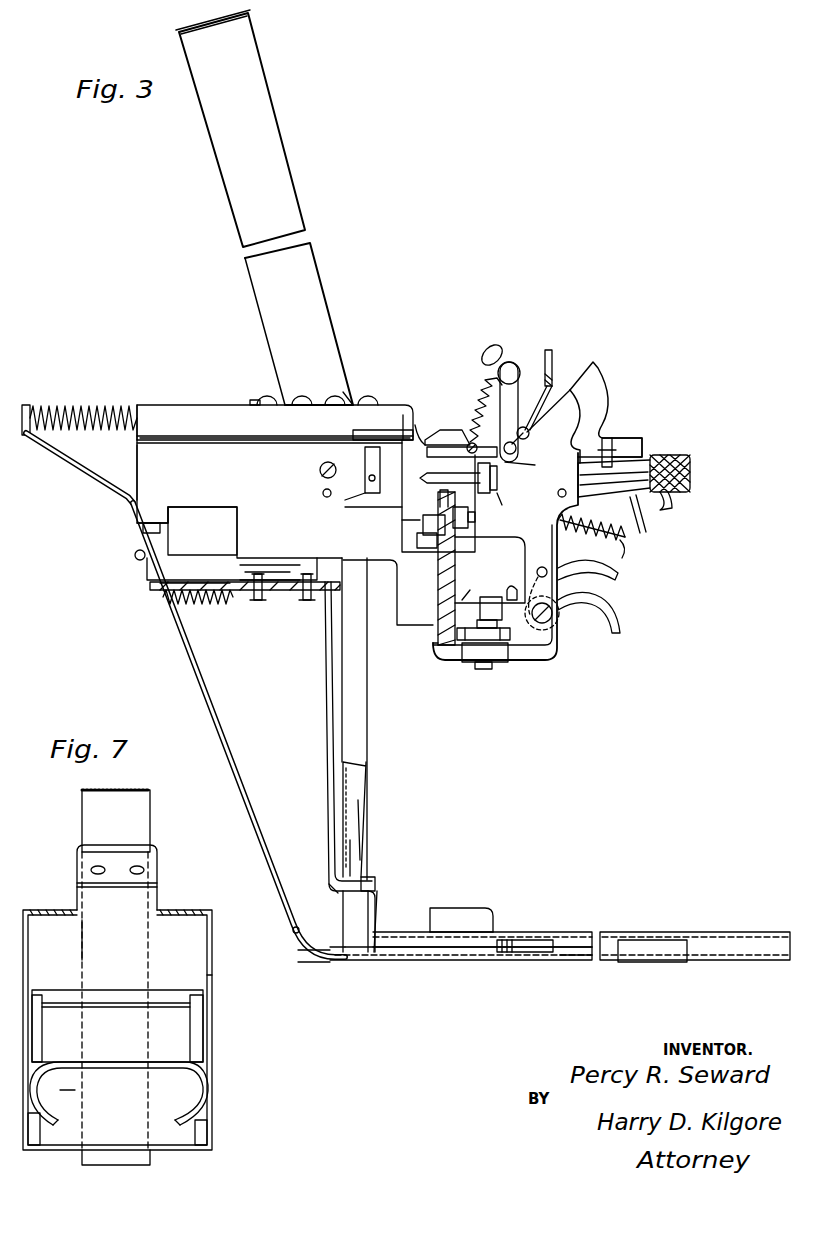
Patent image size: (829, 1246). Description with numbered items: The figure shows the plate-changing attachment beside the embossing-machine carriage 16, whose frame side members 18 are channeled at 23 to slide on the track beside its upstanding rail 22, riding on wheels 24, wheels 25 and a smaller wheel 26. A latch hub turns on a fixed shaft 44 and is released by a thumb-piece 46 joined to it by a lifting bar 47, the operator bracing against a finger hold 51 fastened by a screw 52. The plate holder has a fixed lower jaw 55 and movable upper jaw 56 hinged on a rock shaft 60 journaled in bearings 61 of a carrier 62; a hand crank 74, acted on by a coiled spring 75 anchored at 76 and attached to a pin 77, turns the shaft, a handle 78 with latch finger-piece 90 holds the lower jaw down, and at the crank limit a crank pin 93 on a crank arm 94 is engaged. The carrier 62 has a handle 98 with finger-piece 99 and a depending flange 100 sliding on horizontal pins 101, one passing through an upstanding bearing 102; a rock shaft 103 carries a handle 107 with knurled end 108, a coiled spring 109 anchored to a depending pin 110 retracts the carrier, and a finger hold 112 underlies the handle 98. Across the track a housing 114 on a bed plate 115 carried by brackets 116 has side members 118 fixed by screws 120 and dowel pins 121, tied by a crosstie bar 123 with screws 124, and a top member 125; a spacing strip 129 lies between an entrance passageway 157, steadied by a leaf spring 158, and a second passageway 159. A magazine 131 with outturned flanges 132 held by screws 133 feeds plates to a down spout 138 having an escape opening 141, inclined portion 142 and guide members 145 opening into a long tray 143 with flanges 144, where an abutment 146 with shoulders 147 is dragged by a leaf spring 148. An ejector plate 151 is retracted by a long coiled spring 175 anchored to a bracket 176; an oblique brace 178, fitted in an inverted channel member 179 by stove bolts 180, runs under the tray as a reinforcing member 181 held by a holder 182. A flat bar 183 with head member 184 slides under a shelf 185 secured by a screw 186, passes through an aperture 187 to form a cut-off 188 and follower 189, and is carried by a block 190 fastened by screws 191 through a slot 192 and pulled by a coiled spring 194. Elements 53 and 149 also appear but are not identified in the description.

In FIG. 3, the carriage 16 is at (614, 392).
In FIG. 3, the side members 18 is at (548, 655).
In FIG. 3, the rail 22 is at (460, 545).
In FIG. 3, the channel 23 is at (433, 650).
In FIG. 3, the wheels 24 is at (420, 517).
In FIG. 3, the wheels 25 is at (505, 662).
In FIG. 3, the wheel 26 is at (405, 565).
In FIG. 3, the fixed shaft 44 is at (545, 562).
In FIG. 3, the thumb-piece 46 is at (630, 578).
In FIG. 3, the lifting bar 47 is at (512, 590).
In FIG. 3, the finger hold 51 is at (625, 633).
In FIG. 3, the screw 52 is at (553, 613).
In FIG. 3, the block 53 is at (480, 612).
In FIG. 3, the lower jaw 55 is at (380, 462).
In FIG. 3, the upper jaw 56 is at (415, 425).
In FIG. 3, the rock shaft 60 is at (518, 448).
In FIG. 3, the bearings 61 is at (535, 465).
In FIG. 3, the carrier 62 is at (497, 478).
In FIG. 3, the hand crank 74 is at (498, 373).
In FIG. 3, the coiled spring 75 is at (475, 420).
In FIG. 3, the anchor 76 is at (460, 442).
In FIG. 3, the pin 77 is at (500, 553).
In FIG. 3, the handle 78 is at (552, 362).
In FIG. 3, the finger-piece 90 is at (497, 352).
In FIG. 3, the crank pin 93 is at (545, 398).
In FIG. 3, the crank arm 94 is at (530, 430).
In FIG. 3, the handle 98 is at (635, 463).
In FIG. 3, the finger-piece 99 is at (673, 503).
In FIG. 3, the depending flange 100 is at (500, 498).
In FIG. 3, the horizontal pins 101 is at (440, 495).
In FIG. 3, the upstanding bearing 102 is at (620, 445).
In FIG. 3, the rock shaft 103 is at (562, 489).
In FIG. 3, the handle 107 is at (615, 490).
In FIG. 3, the knurled outer end portion 108 is at (690, 460).
In FIG. 3, the coiled spring 109 is at (605, 540).
In FIG. 3, the depending pin 110 is at (646, 525).
In FIG. 3, the finger hold 112 is at (624, 556).
In FIG. 3, the housing 114 is at (188, 400).
In FIG. 3, the bed plate 115 is at (235, 530).
In FIG. 3, the brackets 116 is at (240, 552).
In FIG. 3, the side members 118 is at (137, 455).
In FIG. 3, the screws 120 is at (320, 470).
In FIG. 3, the dowel pins 121 is at (323, 494).
In FIG. 3, the crosstie bar 123 is at (163, 512).
In FIG. 3, the screws 124 is at (147, 530).
In FIG. 3, the top member 125 is at (148, 408).
In FIG. 3, the spacing strip 129 is at (215, 433).
In FIG. 3, the magazine 131 is at (305, 252).
In FIG. 3, the outturned flanges 132 is at (352, 392).
In FIG. 3, the screws 133 is at (330, 395).
In FIG. 3, the down spout 138 is at (368, 725).
In FIG. 7, the down spout 138 is at (55, 910).
In FIG. 3, the escape opening 141 is at (372, 888).
In FIG. 3, the inclined portion 142 is at (373, 840).
In FIG. 3, the tray 143 is at (700, 935).
In FIG. 7, the tray 143 is at (209, 975).
In FIG. 3, the flanges 144 is at (380, 930).
In FIG. 7, the flanges 144 is at (205, 1138).
In FIG. 3, the guide members 145 is at (360, 872).
In FIG. 3, the abutment 146 is at (475, 908).
In FIG. 7, the abutment 146 is at (122, 978).
In FIG. 3, the shoulders 147 is at (470, 950).
In FIG. 7, the shoulders 147 is at (40, 1040).
In FIG. 7, the leaf spring 148 is at (120, 1062).
In FIG. 3, the spring end 149 is at (520, 940).
In FIG. 7, the spring end 149 is at (58, 1120).
In FIG. 3, the ejector plate 151 is at (403, 413).
In FIG. 3, the entrance passageway 157 is at (350, 444).
In FIG. 3, the leaf spring 158 is at (368, 487).
In FIG. 3, the second passageway 159 is at (355, 435).
In FIG. 3, the long coiled spring 175 is at (97, 405).
In FIG. 3, the bracket 176 is at (60, 445).
In FIG. 3, the oblique brace 178 is at (240, 776).
In FIG. 7, the oblique brace 178 is at (82, 825).
In FIG. 3, the inverted channel member 179 is at (305, 958).
In FIG. 7, the inverted channel member 179 is at (153, 870).
In FIG. 3, the stove bolts 180 is at (292, 930).
In FIG. 7, the stove bolts 180 is at (135, 866).
In FIG. 3, the reinforcing member 181 is at (533, 962).
In FIG. 7, the reinforcing member 181 is at (82, 1166).
In FIG. 3, the holder 182 is at (640, 962).
In FIG. 3, the upright flat bar 183 is at (327, 703).
In FIG. 3, the head member 184 is at (285, 593).
In FIG. 3, the shelf 185 is at (165, 597).
In FIG. 3, the screw 186 is at (137, 560).
In FIG. 3, the aperture 187 is at (336, 902).
In FIG. 7, the aperture 187 is at (150, 920).
In FIG. 3, the cut-off 188 is at (348, 910).
In FIG. 3, the follower 189 is at (345, 960).
In FIG. 3, the block 190 is at (283, 568).
In FIG. 3, the screws 191 is at (256, 602).
In FIG. 3, the longitudinal slot 192 is at (245, 600).
In FIG. 3, the coiled spring 194 is at (170, 605).